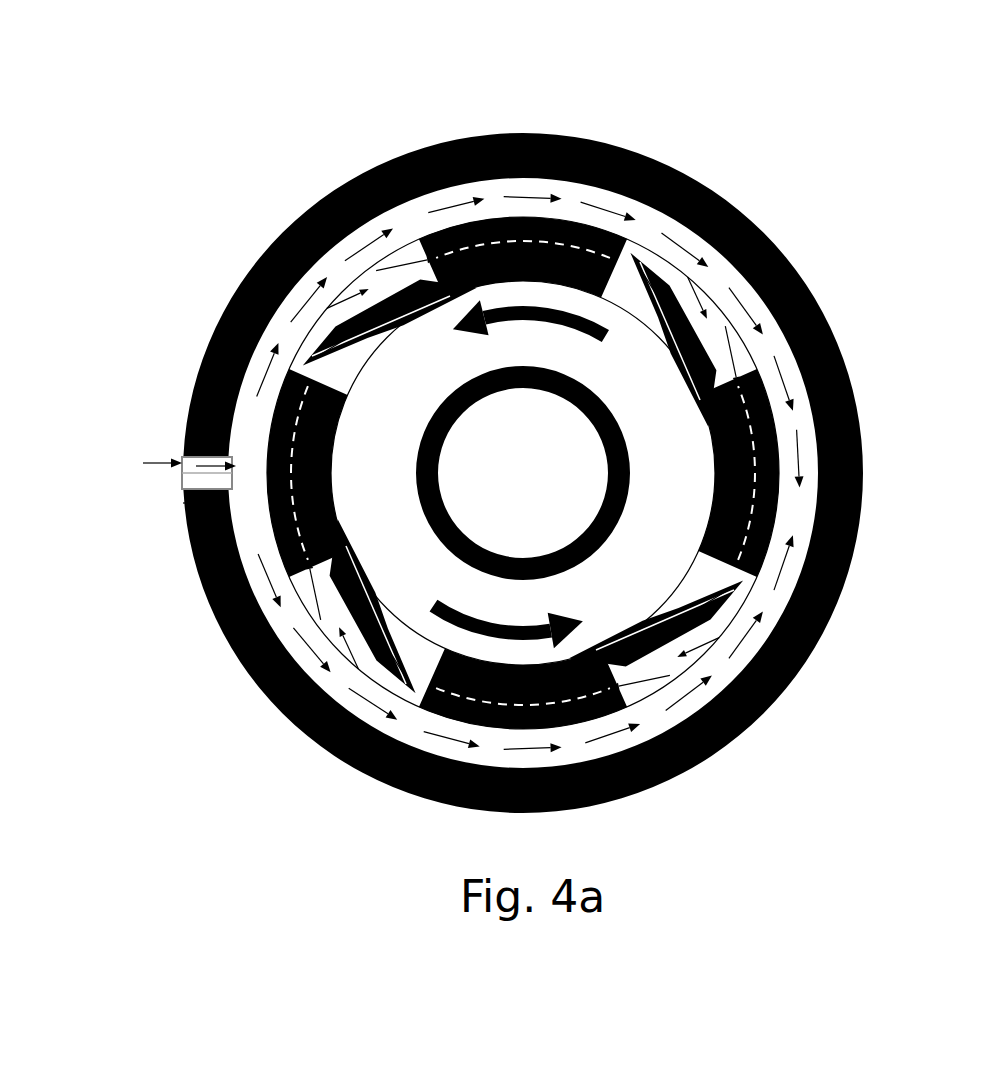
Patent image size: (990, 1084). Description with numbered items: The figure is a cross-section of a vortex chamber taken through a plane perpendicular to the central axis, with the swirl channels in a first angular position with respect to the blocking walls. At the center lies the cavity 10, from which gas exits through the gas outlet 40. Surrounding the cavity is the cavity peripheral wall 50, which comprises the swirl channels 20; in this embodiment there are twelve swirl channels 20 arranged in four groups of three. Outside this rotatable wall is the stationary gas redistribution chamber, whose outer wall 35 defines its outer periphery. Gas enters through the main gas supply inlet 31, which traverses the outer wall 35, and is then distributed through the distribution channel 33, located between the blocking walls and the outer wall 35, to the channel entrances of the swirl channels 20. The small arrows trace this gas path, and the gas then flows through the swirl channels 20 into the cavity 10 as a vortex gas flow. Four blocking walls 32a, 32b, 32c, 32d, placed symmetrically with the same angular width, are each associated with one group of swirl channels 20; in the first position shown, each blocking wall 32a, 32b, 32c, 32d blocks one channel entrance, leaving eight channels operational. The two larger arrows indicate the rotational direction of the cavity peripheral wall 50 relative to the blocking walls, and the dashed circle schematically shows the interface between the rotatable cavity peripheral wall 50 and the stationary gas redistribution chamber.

The cavity 10 is at (668, 473).
The swirl channels 20 is at (320, 423).
The main gas supply inlet 31 is at (165, 488).
The distribution channel 33 is at (243, 460).
The outer wall 35 is at (262, 247).
The blocking wall 32a is at (472, 232).
The blocking wall 32b is at (768, 522).
The blocking wall 32c is at (612, 710).
The blocking wall 32d is at (283, 530).
The gas outlet 40 is at (530, 393).
The cavity peripheral wall 50 is at (340, 460).